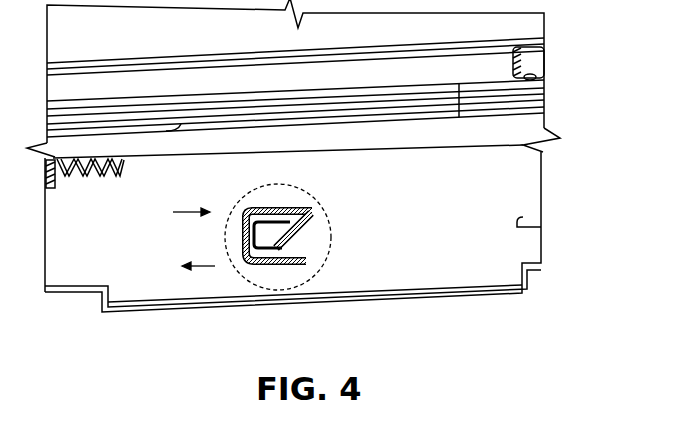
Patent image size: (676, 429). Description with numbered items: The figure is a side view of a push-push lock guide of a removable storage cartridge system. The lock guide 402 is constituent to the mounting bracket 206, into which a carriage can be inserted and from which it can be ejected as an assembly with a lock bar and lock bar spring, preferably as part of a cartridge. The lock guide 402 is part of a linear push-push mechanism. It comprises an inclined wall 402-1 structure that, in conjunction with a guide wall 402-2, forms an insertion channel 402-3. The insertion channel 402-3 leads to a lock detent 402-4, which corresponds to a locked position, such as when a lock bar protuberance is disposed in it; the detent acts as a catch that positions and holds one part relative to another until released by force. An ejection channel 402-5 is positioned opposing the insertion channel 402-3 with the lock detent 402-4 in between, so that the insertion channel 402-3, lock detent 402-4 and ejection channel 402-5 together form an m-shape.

The mounting bracket 206 is at (522, 188).
The lock guide 402 is at (280, 266).
The inclined wall 402-1 is at (293, 228).
The guide wall 402-2 is at (281, 266).
The insertion channel 402-3 is at (252, 252).
The lock detent 402-4 is at (242, 234).
The ejection channel 402-5 is at (292, 208).